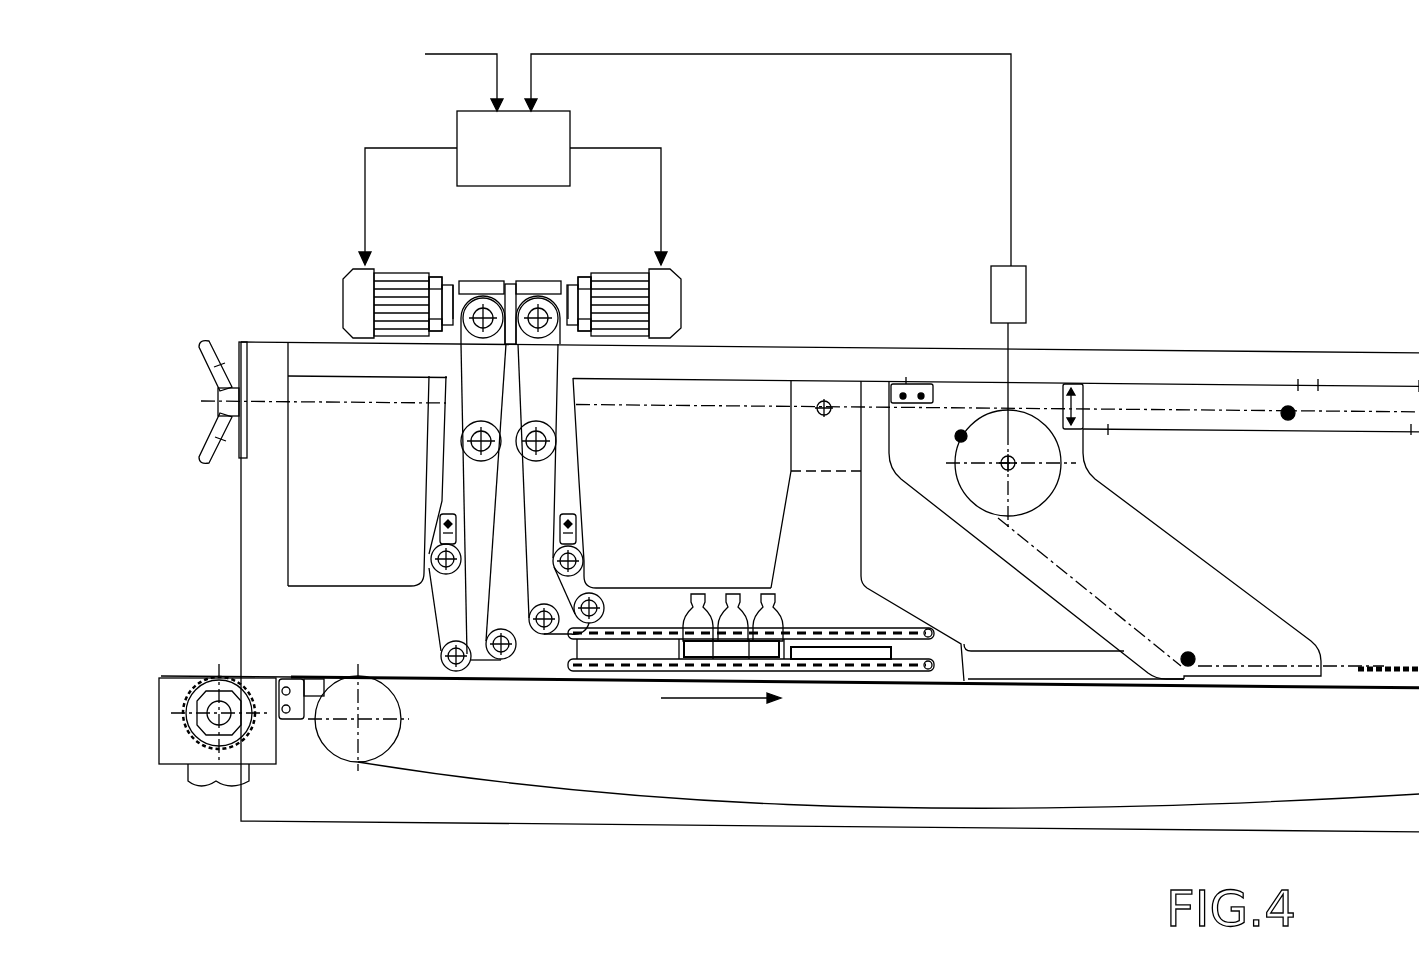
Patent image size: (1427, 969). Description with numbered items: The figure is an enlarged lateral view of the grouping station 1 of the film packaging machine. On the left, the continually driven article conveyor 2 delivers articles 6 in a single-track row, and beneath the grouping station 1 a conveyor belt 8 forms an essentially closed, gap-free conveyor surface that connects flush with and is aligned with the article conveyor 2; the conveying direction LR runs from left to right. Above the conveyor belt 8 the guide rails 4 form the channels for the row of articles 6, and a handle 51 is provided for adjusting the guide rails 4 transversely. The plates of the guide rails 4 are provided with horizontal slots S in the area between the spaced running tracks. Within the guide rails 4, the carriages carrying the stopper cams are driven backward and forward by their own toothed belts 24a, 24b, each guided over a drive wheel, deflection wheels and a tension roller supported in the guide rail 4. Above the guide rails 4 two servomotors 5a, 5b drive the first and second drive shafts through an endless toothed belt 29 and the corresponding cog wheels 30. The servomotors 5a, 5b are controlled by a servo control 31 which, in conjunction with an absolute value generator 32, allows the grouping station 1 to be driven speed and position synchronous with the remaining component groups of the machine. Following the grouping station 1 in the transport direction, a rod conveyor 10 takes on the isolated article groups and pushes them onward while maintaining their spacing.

The grouping station 1 is at (728, 343).
The article conveyor 2 is at (180, 672).
The guide rails 4 is at (342, 612).
The servomotor 5a is at (398, 288).
The servomotor 5b is at (617, 293).
The articles 6 is at (765, 592).
The conveyor belt 8 is at (1035, 810).
The rod conveyor 10 is at (1287, 418).
The toothed belt 24a is at (460, 486).
The toothed belt 24b is at (554, 496).
The endless toothed belt 29 is at (460, 400).
The cog wheels 30 is at (518, 287).
The servo control 31 is at (526, 167).
The absolute value generator 32 is at (1027, 300).
The handle 51 is at (200, 348).
The horizontal slots S is at (633, 647).
The conveying direction LR is at (721, 715).